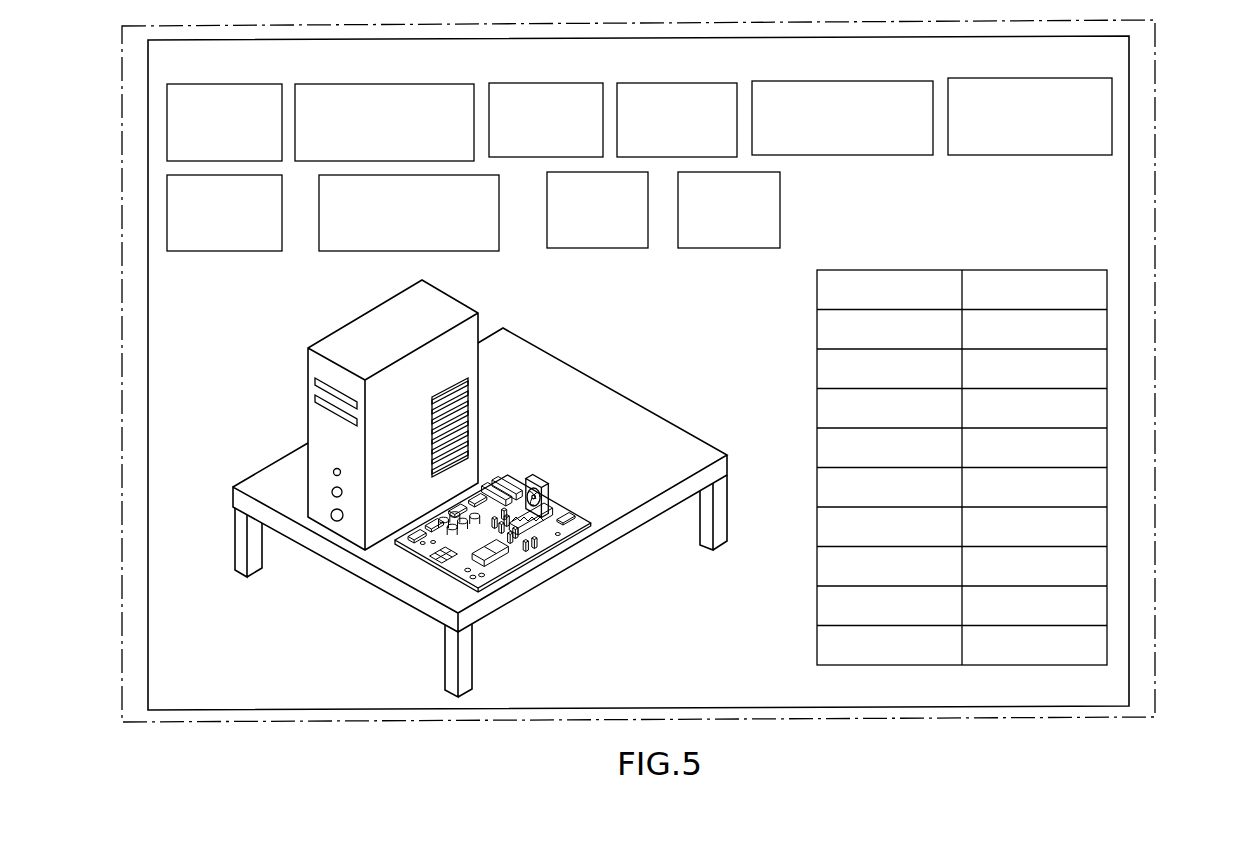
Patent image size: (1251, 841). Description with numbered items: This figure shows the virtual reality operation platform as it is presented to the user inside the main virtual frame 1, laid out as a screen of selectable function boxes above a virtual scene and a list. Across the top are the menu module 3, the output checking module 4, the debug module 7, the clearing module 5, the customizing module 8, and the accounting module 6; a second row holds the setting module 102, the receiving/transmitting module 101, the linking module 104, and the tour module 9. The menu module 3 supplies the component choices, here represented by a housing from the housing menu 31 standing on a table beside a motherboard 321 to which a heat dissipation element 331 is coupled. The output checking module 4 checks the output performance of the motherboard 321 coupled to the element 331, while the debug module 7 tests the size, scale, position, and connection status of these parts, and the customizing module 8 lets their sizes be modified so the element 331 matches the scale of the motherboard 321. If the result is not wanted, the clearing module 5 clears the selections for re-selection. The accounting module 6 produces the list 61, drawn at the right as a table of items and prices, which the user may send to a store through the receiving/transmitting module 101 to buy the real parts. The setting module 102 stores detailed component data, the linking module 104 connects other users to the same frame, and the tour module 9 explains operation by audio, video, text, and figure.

The main virtual frame 1 is at (1118, 198).
The menu module 3 is at (222, 86).
The output checking module 4 is at (438, 86).
The debug module 7 is at (577, 85).
The clearing module 5 is at (713, 85).
The customizing module 8 is at (895, 83).
The accounting module 6 is at (1030, 80).
The setting module 102 is at (223, 250).
The receiving/transmitting module 101 is at (470, 250).
The linking module 104 is at (598, 247).
The tour module 9 is at (733, 246).
The housing menu 31 is at (299, 374).
The element 331 is at (548, 470).
The motherboard 321 is at (573, 513).
The list 61 is at (806, 411).